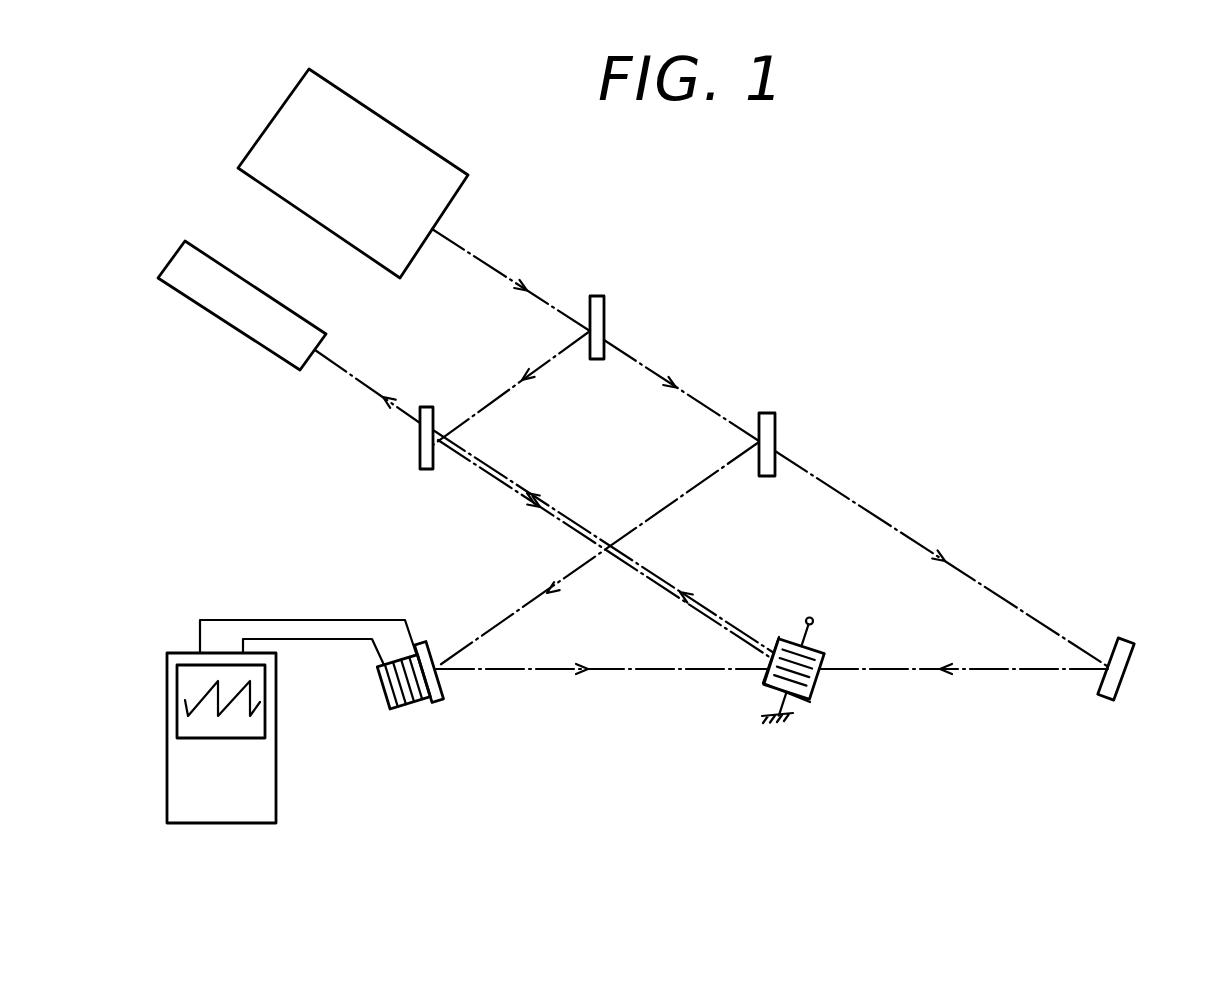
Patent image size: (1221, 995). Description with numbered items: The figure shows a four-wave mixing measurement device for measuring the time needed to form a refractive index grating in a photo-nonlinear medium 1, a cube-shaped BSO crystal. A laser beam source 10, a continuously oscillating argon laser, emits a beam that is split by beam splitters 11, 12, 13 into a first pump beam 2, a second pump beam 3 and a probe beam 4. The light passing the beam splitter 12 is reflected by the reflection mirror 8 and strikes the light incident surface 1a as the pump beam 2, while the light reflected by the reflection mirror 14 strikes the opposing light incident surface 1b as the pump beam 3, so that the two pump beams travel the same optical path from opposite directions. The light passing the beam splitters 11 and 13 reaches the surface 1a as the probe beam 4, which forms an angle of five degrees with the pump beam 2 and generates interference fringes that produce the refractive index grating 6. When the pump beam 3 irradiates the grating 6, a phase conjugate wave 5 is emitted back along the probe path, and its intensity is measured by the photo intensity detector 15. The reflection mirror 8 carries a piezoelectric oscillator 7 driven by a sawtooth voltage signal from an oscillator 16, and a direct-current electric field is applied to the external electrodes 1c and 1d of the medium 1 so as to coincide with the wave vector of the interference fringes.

The photo-nonlinear medium 1 is at (795, 672).
The light incident surface 1a is at (762, 675).
The light incident surface 1b is at (815, 687).
The external electrode 1c is at (806, 615).
The external electrode 1d is at (792, 708).
The first pump beam 2 is at (643, 672).
The second pump beam 3 is at (983, 672).
The probe beam 4 is at (635, 553).
The phase conjugate wave 5 is at (663, 580).
The refractive index grating 6 is at (825, 653).
The piezoelectric oscillator 7 is at (403, 710).
The reflection mirror 8 is at (438, 700).
The laser beam source 10 is at (372, 127).
The beam splitter 11 is at (604, 319).
The beam splitter 12 is at (775, 434).
The beam splitter 13 is at (420, 443).
The reflection mirror 14 is at (1130, 657).
The photo intensity detector 15 is at (222, 323).
The oscillator 16 is at (167, 698).